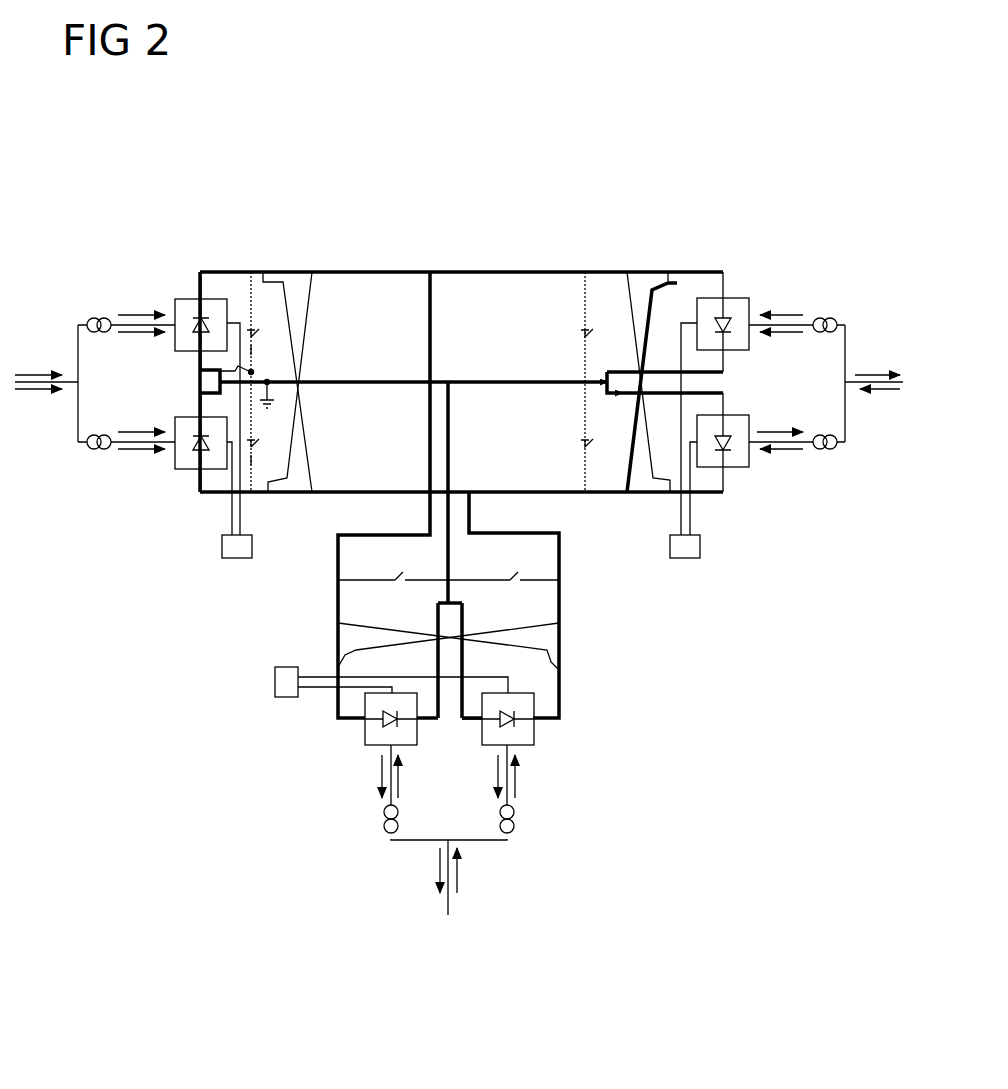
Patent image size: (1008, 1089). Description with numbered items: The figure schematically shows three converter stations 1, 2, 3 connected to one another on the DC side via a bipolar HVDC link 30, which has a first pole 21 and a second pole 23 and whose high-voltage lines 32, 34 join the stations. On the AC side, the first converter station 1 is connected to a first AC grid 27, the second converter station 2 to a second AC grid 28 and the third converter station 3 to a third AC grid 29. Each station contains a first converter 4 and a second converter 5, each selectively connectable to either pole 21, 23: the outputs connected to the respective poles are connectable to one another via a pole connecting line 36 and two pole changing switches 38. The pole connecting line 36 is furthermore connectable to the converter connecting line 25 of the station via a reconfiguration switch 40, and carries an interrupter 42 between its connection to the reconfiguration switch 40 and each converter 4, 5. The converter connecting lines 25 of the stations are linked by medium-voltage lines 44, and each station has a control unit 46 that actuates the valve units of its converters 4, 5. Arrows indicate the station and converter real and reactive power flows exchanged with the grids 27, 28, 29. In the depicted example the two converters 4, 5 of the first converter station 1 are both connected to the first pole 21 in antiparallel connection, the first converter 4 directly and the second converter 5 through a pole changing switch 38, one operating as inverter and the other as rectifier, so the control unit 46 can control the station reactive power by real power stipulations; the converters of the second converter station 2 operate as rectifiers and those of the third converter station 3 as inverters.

The first converter station 1 is at (706, 250).
The second converter station 2 is at (226, 262).
The third converter station 3 is at (570, 716).
The first converter 4 is at (189, 478).
The second converter 5 is at (190, 297).
The first pole 21 is at (305, 497).
The second pole 23 is at (342, 270).
The converter connecting line 25 is at (218, 375).
The first AC grid 27 is at (900, 380).
The second AC grid 28 is at (72, 380).
The third AC grid 29 is at (449, 903).
The HVDC link 30 is at (428, 262).
The high-voltage line 32 is at (488, 490).
The high-voltage line 34 is at (500, 270).
The pole connecting line 36 is at (255, 340).
The pole changing switch 38 is at (668, 268).
The reconfiguration switch 40 is at (603, 395).
The interrupter 42 is at (582, 333).
The medium-voltage line 44 is at (470, 380).
The control unit 46 is at (240, 560).